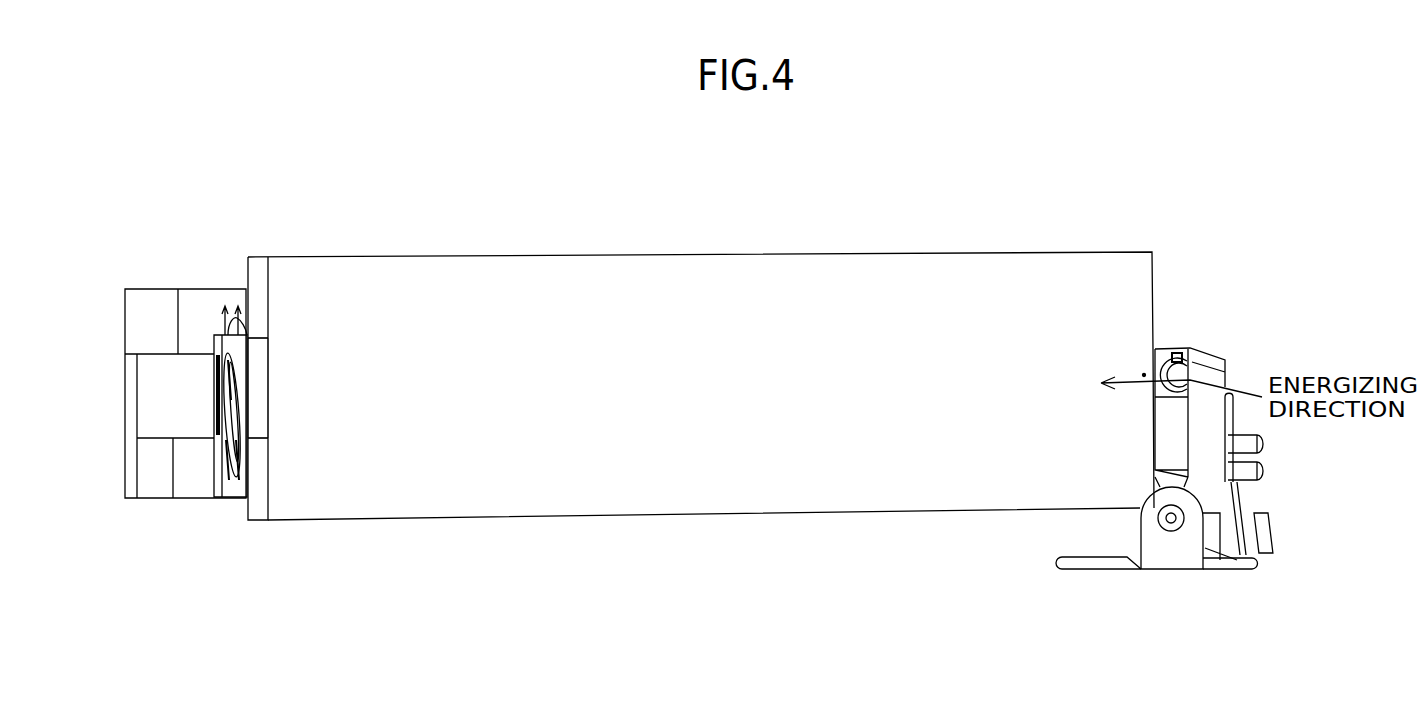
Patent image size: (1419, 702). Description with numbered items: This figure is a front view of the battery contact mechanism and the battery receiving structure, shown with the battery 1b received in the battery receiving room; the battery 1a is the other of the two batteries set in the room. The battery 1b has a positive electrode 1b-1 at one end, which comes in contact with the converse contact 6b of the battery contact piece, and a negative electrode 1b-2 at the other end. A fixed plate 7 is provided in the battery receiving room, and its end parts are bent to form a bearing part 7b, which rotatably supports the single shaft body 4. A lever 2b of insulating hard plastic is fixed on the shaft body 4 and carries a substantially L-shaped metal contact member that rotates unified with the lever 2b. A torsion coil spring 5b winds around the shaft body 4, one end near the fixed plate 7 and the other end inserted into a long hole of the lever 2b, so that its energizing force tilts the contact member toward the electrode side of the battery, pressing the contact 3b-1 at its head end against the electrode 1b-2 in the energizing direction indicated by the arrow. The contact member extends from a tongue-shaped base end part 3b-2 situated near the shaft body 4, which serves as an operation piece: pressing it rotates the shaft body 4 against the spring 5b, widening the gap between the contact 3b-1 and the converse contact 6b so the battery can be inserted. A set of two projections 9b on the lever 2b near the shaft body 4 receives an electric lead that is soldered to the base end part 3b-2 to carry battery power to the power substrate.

The battery 1a is at (258, 262).
The battery 1b is at (803, 282).
The positive electrode 1b-1 is at (262, 375).
The negative electrode 1b-2 is at (1138, 368).
The lever 2b is at (1220, 388).
The contact 3b-1 is at (1175, 352).
The base end part 3b-2 is at (1242, 535).
The shaft body 4 is at (1170, 527).
The torsion coil spring 5b is at (1225, 567).
The converse contact 6b is at (197, 305).
The fixed plate 7 is at (1185, 570).
The bearing part 7b is at (1148, 525).
The projections 9b is at (1263, 440).